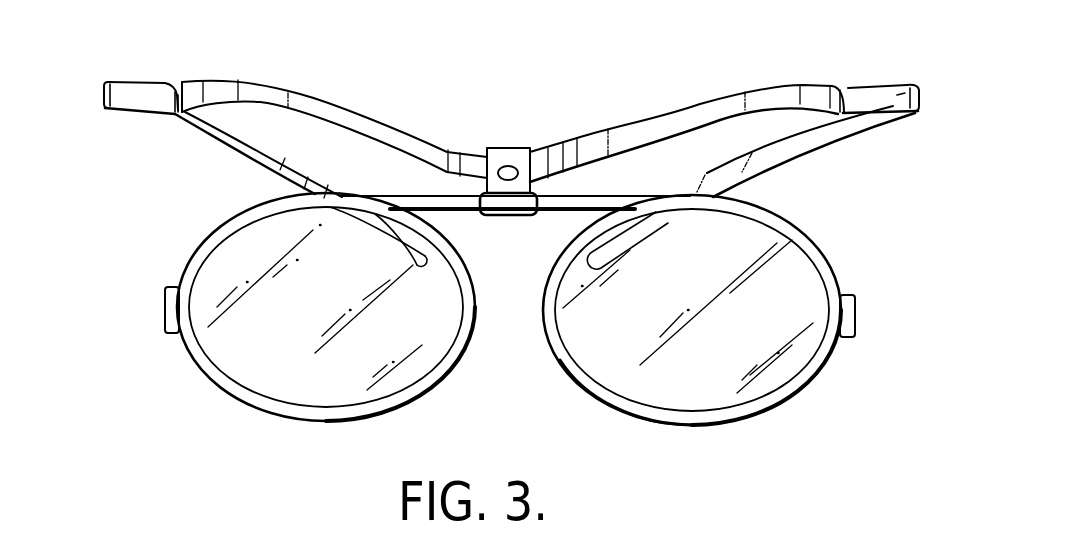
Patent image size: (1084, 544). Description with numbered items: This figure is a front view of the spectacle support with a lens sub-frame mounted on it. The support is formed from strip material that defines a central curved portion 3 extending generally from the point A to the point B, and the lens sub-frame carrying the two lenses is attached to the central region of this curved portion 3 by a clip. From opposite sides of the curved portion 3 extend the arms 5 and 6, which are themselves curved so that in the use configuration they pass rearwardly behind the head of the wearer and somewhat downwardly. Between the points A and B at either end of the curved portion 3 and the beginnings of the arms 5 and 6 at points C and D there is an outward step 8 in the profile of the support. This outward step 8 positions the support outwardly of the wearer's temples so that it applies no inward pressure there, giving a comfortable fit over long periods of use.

The central curved portion 3 is at (306, 100).
The arm 5 is at (760, 167).
The arm 6 is at (250, 147).
The outward step 8 is at (128, 97).
The point A is at (848, 105).
The point B is at (173, 100).
The point C is at (927, 96).
The point D is at (103, 95).